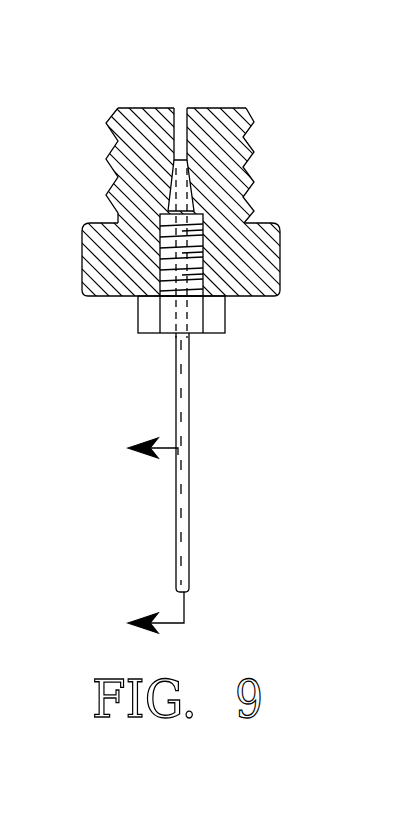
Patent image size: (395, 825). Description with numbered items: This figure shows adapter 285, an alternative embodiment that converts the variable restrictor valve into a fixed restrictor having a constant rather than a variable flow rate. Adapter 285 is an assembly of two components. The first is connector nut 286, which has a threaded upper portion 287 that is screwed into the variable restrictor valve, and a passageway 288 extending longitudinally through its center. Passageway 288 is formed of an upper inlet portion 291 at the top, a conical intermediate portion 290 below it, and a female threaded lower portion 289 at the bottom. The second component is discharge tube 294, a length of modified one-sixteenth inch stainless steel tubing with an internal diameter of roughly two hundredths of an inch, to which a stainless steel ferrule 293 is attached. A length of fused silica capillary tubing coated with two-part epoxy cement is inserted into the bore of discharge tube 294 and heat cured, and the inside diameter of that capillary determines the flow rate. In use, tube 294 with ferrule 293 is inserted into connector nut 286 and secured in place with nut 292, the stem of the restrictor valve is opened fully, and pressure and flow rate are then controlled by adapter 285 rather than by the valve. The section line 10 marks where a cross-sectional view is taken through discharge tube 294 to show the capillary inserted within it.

The adapter 285 is at (203, 90).
The connector nut 286 is at (267, 267).
The threaded upper portion 287 is at (250, 182).
The passageway 288 is at (173, 146).
The female threaded lower portion 289 is at (158, 258).
The conical intermediate portion 290 is at (186, 176).
The upper inlet portion 291 is at (180, 104).
The nut 292 is at (138, 326).
The stainless steel ferrule 293 is at (200, 172).
The discharge tube 294 is at (190, 395).
The section line 10- 10 is at (129, 535).